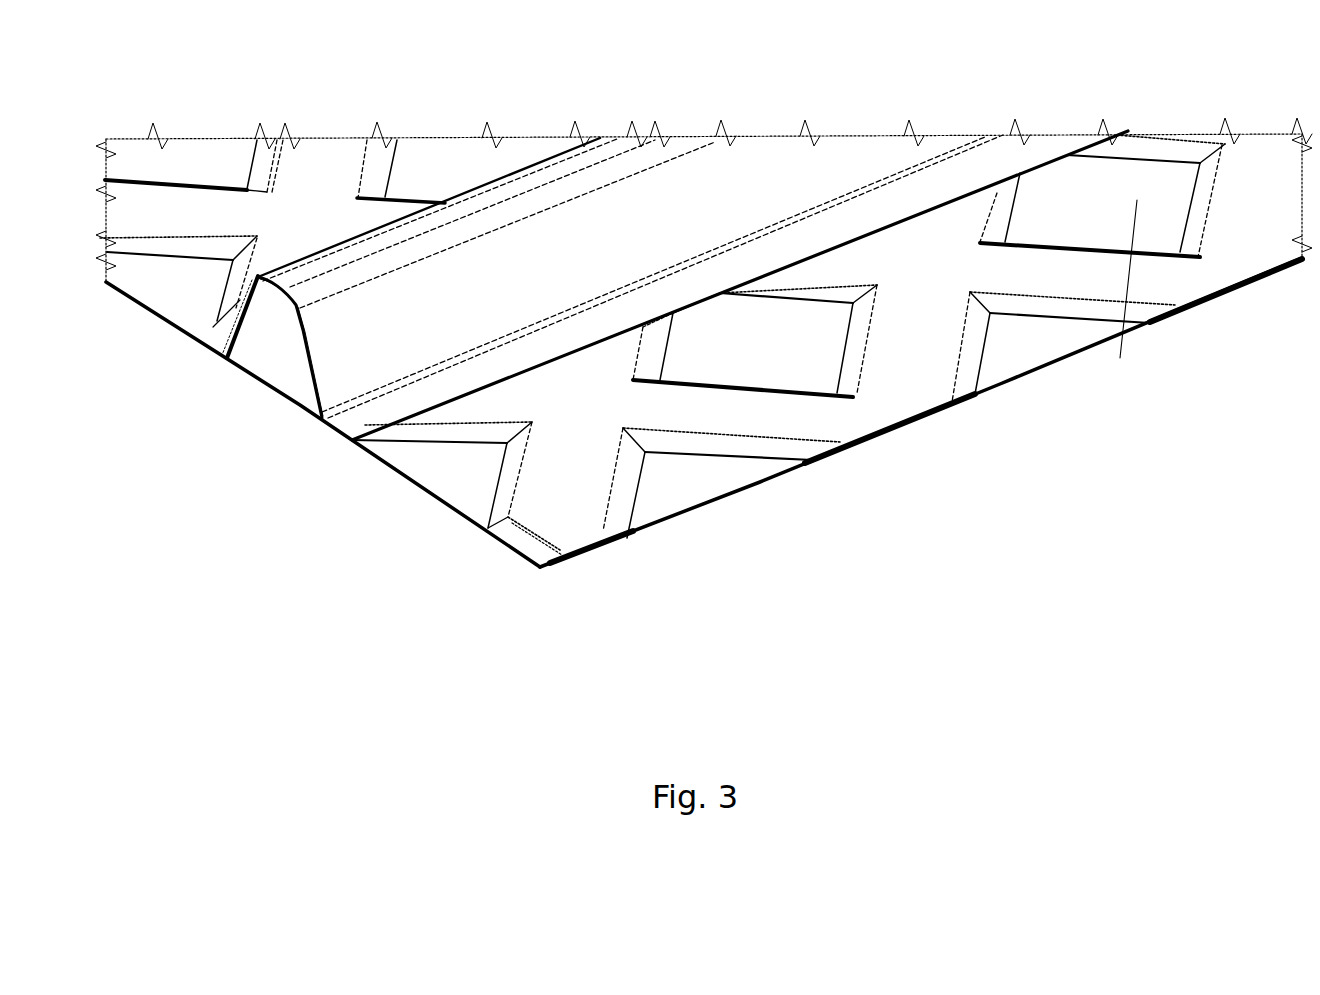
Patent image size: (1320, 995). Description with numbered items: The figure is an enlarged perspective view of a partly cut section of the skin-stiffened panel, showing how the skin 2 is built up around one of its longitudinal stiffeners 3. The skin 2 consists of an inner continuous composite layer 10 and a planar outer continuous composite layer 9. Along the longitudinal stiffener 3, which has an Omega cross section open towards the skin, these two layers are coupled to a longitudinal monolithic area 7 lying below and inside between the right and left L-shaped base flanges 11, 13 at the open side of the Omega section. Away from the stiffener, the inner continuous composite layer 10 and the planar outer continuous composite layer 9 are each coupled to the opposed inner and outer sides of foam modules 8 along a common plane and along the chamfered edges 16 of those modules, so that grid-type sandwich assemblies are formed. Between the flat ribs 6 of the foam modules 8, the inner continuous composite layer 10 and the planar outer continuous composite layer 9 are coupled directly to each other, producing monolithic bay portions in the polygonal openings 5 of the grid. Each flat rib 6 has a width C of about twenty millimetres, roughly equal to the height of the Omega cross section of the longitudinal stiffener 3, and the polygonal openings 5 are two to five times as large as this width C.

The skin 2 is at (677, 536).
The longitudinal stiffener 3 is at (348, 353).
The longitudinal monolithic area 7 is at (283, 363).
The left L-shaped base flange 13 is at (224, 335).
The right L-shaped base flange 11 is at (357, 415).
The inner continuous composite layer 10 is at (529, 543).
The planar outer continuous composite layer 9 is at (533, 576).
The chamfered edge 16 is at (803, 455).
The foam module 8 is at (876, 442).
The flat rib 6 is at (927, 315).
The polygonal opening 5 is at (1050, 342).
The width c C is at (1132, 309).